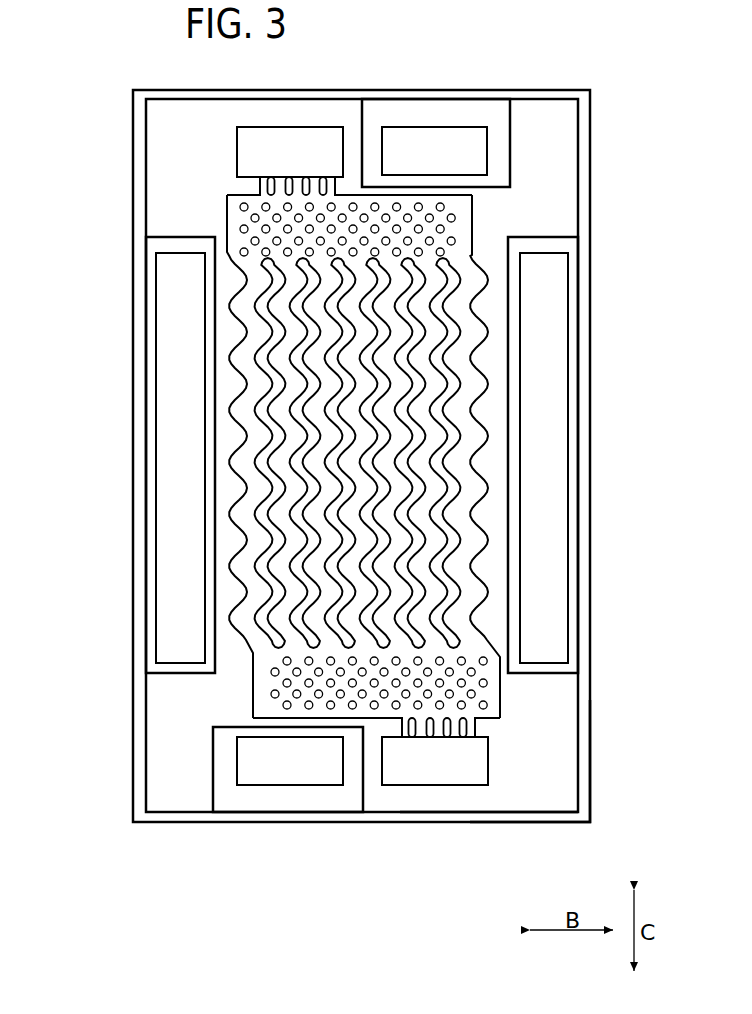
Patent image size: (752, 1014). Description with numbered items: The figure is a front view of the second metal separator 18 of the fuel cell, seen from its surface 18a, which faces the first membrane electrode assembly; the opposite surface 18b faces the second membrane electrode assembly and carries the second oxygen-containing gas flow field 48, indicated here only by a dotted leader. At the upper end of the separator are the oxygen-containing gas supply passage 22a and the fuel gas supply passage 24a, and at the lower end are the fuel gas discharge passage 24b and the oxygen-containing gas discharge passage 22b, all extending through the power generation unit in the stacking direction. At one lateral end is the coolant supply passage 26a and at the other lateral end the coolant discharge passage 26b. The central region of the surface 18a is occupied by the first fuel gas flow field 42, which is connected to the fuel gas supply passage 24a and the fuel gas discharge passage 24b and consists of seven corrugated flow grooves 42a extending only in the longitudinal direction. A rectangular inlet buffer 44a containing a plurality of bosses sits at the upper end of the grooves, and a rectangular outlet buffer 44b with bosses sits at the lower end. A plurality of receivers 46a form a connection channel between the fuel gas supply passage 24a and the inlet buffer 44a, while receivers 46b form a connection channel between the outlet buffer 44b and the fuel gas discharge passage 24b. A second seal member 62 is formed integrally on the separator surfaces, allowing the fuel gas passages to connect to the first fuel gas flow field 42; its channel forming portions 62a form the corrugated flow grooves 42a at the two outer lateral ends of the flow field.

The second metal separator 18 is at (569, 52).
The surface 18a is at (547, 795).
The surface 18b is at (484, 795).
The second seal member 62 is at (441, 99).
The channel forming portions 62a is at (242, 492).
The oxygen-containing gas supply passage 22a is at (436, 143).
The oxygen-containing gas discharge passage 22b is at (288, 769).
The fuel gas supply passage 24a is at (290, 152).
The fuel gas discharge passage 24b is at (435, 761).
The coolant supply passage 26a is at (540, 403).
The coolant discharge passage 26b is at (183, 402).
The first fuel gas flow field 42 is at (489, 244).
The corrugated flow grooves 42a is at (428, 293).
The inlet buffer 44a is at (452, 239).
The outlet buffer 44b is at (285, 705).
The receivers 46a is at (264, 188).
The receivers 46b is at (458, 726).
The second oxygen-containing gas flow field 48 is at (458, 593).